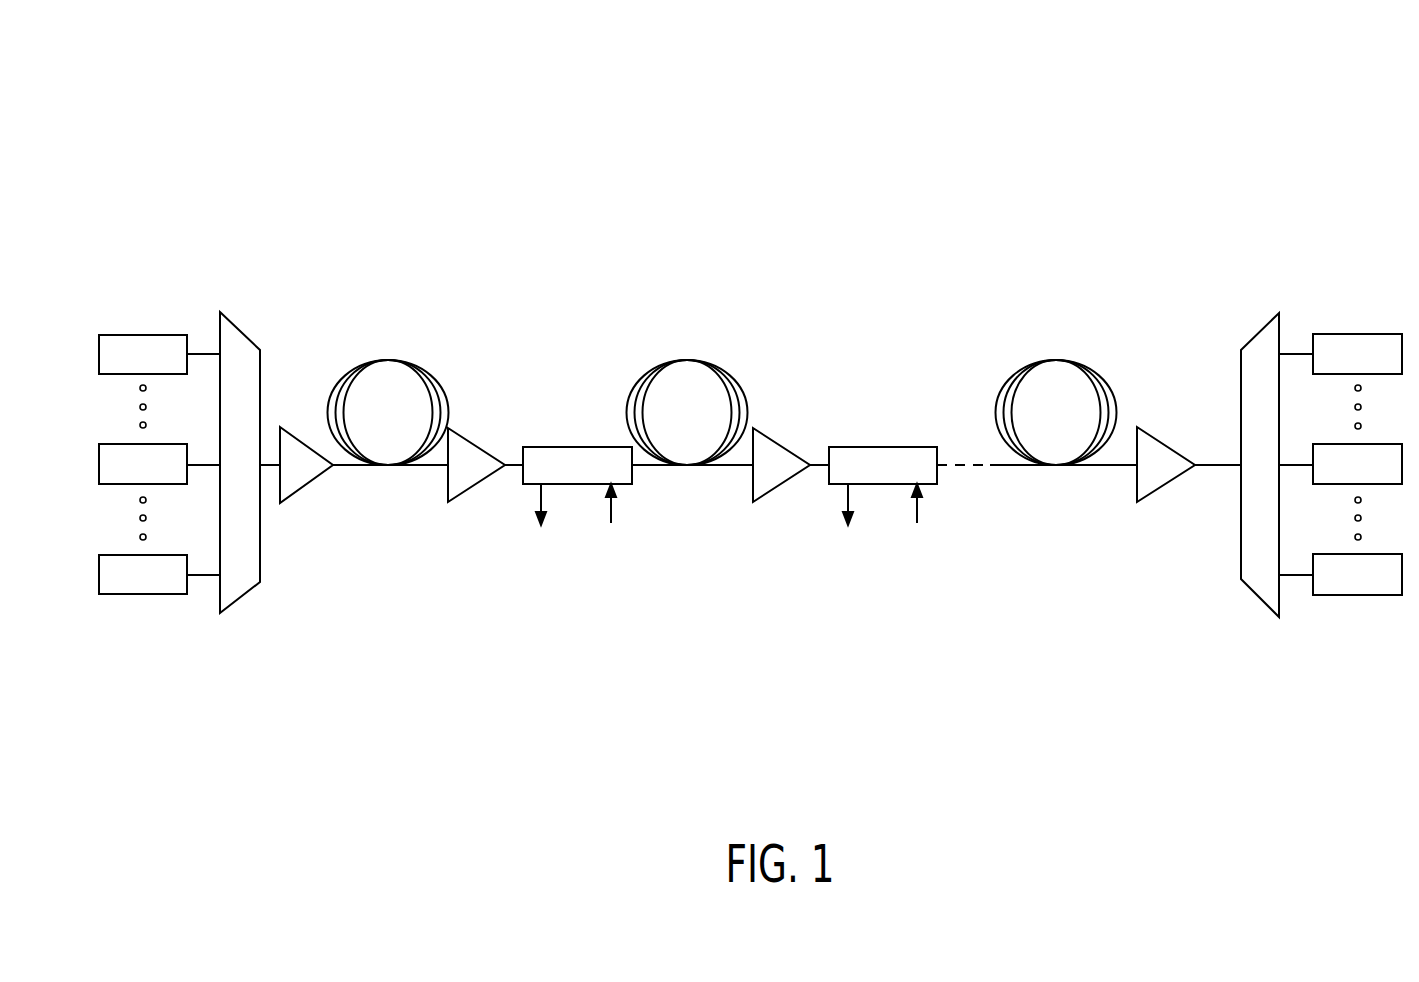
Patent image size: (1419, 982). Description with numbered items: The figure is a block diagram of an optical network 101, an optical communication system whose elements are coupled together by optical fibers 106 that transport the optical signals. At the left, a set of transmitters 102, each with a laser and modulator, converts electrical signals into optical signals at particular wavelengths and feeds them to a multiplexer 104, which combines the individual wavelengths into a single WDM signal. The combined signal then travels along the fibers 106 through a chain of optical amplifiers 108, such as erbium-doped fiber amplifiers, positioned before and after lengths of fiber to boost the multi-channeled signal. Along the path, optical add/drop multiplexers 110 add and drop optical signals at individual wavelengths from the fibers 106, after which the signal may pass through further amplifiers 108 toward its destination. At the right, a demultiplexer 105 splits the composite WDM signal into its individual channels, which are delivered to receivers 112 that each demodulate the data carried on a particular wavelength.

The optical network 101 is at (190, 68).
The transmitters 102 is at (129, 334).
The multiplexer 104 is at (241, 331).
The demultiplexer 105 is at (1267, 324).
The optical fibers 106 is at (381, 360).
The optical amplifiers 108 is at (303, 490).
The optical add/drop multiplexers 110 is at (562, 446).
The receivers 112 is at (1373, 334).